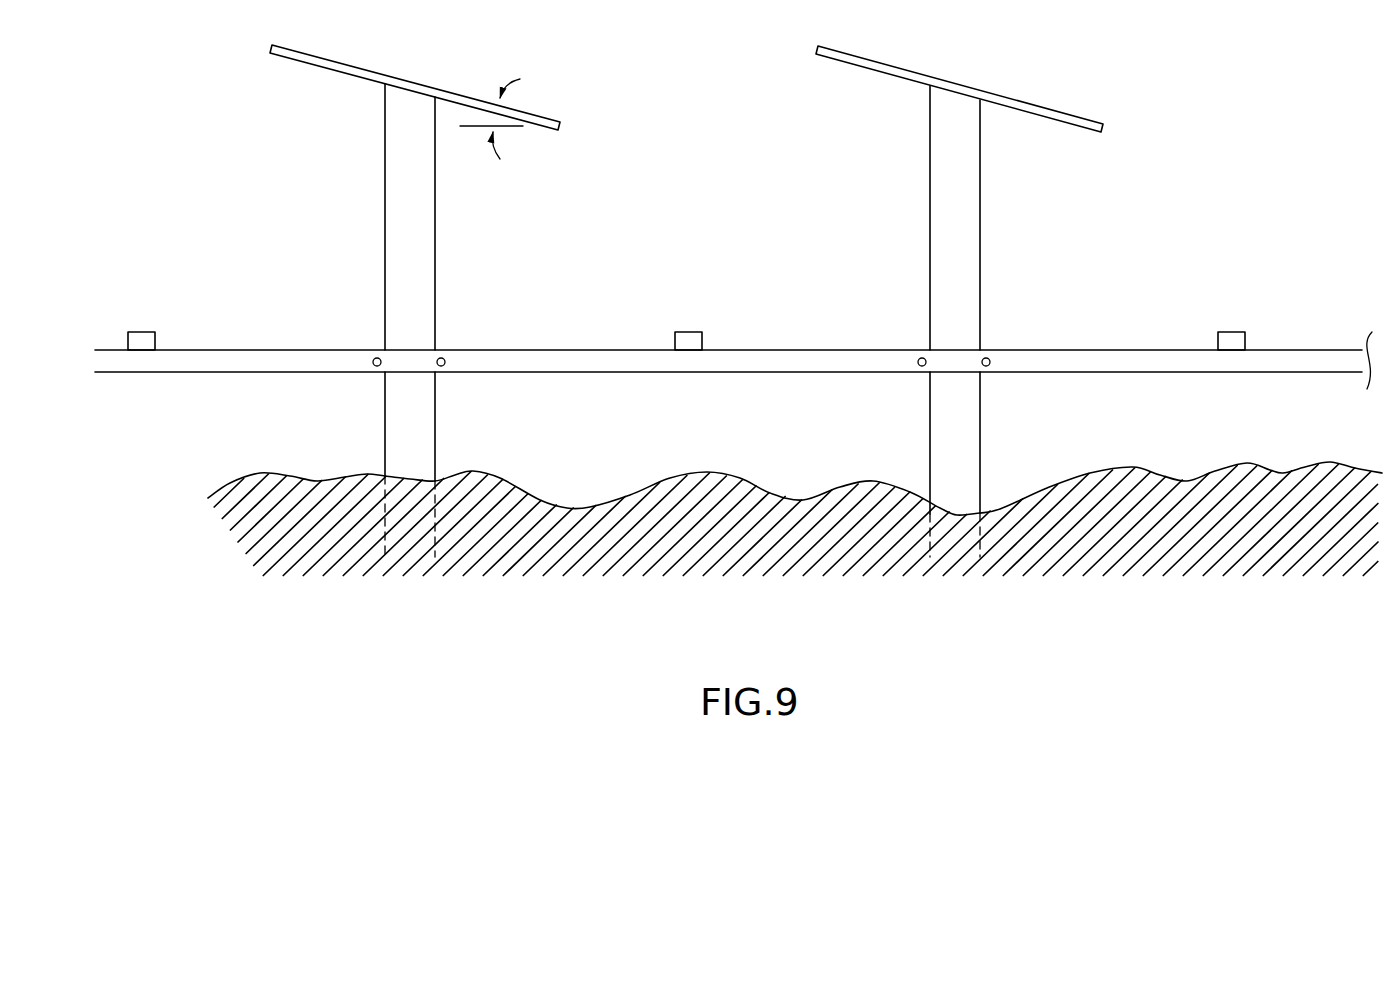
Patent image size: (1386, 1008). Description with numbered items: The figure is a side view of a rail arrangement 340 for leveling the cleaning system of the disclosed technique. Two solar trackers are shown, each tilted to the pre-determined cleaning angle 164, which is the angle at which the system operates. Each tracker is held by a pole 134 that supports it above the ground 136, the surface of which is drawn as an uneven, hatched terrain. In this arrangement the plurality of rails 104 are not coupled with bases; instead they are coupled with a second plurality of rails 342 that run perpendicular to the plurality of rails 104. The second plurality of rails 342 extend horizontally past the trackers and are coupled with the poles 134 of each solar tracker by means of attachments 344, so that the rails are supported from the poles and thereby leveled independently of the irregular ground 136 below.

The plurality of rails 104 is at (141, 331).
The pole 134 is at (398, 165).
The ground 136 is at (540, 507).
The cleaning angle 164 is at (497, 148).
The rail arrangement 340 is at (352, 629).
The second plurality of rails 342 is at (557, 362).
The attachments 344 is at (377, 357).